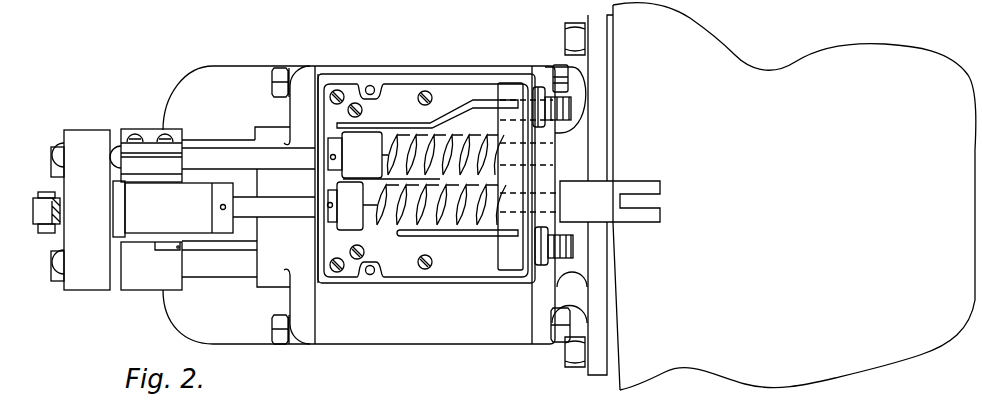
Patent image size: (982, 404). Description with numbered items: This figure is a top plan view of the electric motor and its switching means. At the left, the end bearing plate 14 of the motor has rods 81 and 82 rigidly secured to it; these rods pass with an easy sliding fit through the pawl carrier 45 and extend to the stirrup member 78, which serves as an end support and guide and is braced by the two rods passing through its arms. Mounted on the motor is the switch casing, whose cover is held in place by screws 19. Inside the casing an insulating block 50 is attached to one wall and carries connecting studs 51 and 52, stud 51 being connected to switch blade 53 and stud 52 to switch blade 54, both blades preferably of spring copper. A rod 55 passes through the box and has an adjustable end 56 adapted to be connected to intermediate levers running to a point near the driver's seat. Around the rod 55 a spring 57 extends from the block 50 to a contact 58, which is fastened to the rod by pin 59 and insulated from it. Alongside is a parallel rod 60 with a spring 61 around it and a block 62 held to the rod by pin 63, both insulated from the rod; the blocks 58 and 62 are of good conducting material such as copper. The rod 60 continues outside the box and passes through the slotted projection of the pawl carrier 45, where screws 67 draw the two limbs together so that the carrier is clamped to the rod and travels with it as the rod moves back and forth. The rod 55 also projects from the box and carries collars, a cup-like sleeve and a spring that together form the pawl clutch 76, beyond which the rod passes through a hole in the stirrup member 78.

The bearing plate 14 is at (366, 205).
The screws 19 is at (401, 400).
The pawl carrier 45 is at (151, 266).
The insulating block 50 is at (508, 93).
The connecting stud 51 is at (573, 246).
The connecting stud 52 is at (573, 108).
The switch blade 53 is at (412, 236).
The switch blade 54 is at (383, 122).
The rod 55 is at (545, 198).
The adjustable end 56 is at (632, 181).
The spring 57 is at (434, 196).
The contact 58 is at (345, 206).
The pin 59 is at (328, 205).
The rod 60 is at (445, 117).
The spring 61 is at (430, 134).
The block 62 is at (384, 155).
The pin 63 is at (331, 157).
The screws 67 is at (167, 129).
The pawl clutch 76 is at (214, 209).
The stirrup member 78 is at (71, 210).
The rod 81 is at (219, 259).
The rod 82 is at (240, 138).